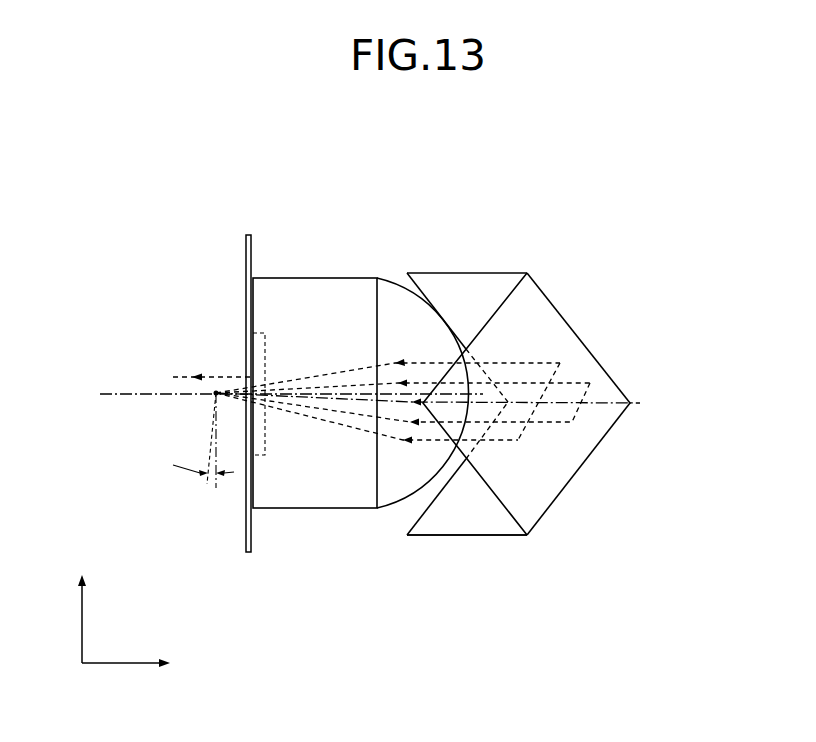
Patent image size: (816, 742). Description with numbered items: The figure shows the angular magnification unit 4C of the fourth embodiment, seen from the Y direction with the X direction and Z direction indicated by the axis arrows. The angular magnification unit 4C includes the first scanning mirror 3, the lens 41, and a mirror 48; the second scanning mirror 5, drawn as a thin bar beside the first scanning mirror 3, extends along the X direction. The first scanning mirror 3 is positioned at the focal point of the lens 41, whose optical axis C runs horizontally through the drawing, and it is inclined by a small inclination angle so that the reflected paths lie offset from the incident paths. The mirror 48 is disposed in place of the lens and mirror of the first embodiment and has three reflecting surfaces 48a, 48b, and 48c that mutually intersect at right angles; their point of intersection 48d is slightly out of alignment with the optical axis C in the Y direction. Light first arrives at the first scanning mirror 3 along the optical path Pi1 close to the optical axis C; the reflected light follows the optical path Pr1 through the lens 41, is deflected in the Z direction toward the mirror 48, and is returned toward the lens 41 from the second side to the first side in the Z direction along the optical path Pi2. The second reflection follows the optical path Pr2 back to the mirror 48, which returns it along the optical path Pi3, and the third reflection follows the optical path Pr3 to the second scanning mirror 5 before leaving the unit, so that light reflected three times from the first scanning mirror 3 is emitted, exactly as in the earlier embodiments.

The first scanning mirror 3 is at (216, 390).
The second scanning mirror 5 is at (247, 235).
The lens 41 is at (340, 272).
The mirror 48 is at (561, 407).
The reflecting surface 48a is at (541, 498).
The reflecting surface 48b is at (465, 292).
The reflecting surface 48c is at (450, 517).
The point of intersection 48d is at (632, 405).
The angular magnification unit 4C is at (561, 365).
The optical path Pi1 is at (315, 375).
The optical path Pi2 is at (330, 378).
The optical path Pi3 is at (357, 365).
The optical path Pr1 is at (298, 410).
The optical path Pr2 is at (342, 430).
The optical path Pr3 is at (181, 372).
The optical axis C is at (107, 391).
The X direction X is at (70, 619).
The Z direction Z is at (126, 678).